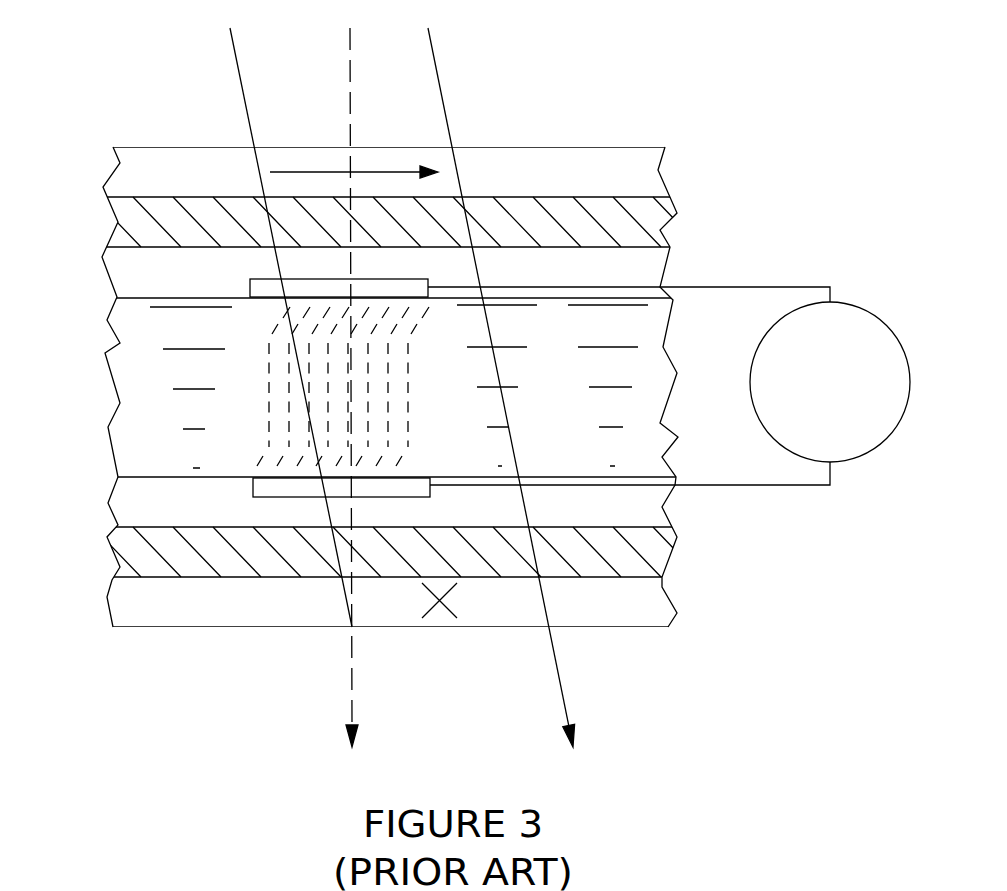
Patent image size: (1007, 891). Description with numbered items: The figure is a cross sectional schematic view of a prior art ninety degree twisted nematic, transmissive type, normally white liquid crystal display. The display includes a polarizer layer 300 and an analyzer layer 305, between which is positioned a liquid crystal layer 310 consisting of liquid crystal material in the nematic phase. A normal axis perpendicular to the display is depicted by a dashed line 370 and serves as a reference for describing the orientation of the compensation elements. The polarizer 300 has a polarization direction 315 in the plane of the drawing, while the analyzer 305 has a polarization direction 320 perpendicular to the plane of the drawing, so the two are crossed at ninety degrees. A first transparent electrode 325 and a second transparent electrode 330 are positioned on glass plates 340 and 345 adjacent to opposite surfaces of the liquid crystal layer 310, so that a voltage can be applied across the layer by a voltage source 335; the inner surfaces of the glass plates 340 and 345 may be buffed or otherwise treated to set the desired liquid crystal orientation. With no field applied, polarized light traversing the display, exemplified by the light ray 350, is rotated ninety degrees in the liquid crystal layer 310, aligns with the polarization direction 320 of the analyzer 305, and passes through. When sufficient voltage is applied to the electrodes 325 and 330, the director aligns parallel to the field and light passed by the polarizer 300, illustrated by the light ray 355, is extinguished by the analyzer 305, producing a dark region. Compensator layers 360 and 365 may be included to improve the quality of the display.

The polarizer layer 300 is at (658, 168).
The analyzer layer 305 is at (655, 595).
The liquid crystal layer 310 is at (135, 458).
The polarization direction 315 is at (368, 172).
The polarization direction 320 is at (443, 615).
The first transparent electrode 325 is at (250, 291).
The second transparent electrode 330 is at (253, 488).
The voltage source 335 is at (852, 330).
The glass plate 340 is at (663, 275).
The glass plate 345 is at (660, 498).
The light ray 350 is at (447, 108).
The light ray 355 is at (246, 100).
The compensator layer 360 is at (117, 220).
The compensator layer 365 is at (117, 620).
The normal axis 370 is at (348, 40).